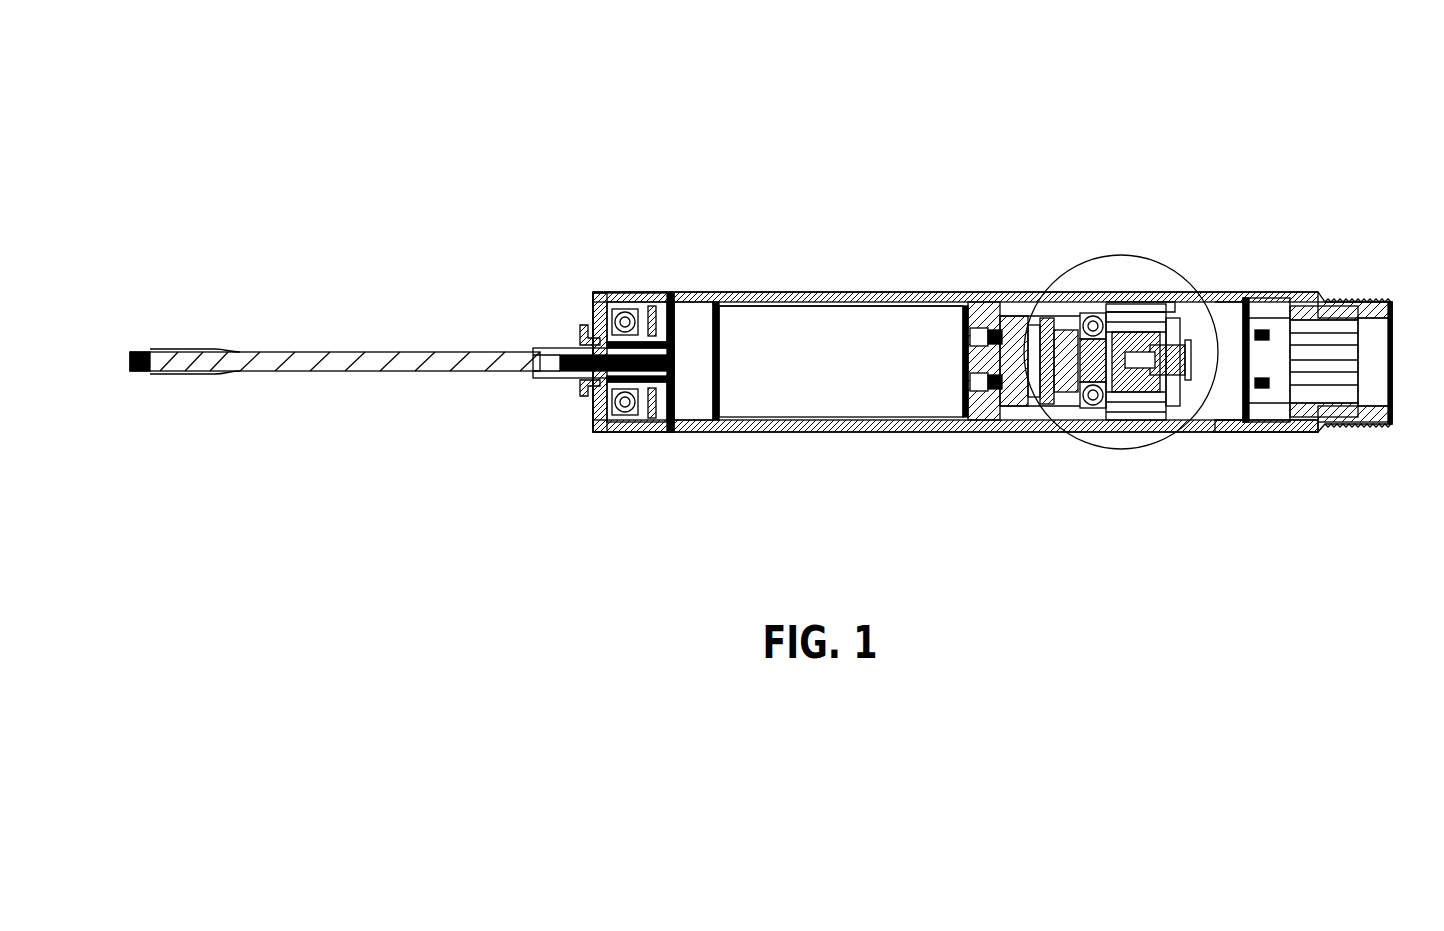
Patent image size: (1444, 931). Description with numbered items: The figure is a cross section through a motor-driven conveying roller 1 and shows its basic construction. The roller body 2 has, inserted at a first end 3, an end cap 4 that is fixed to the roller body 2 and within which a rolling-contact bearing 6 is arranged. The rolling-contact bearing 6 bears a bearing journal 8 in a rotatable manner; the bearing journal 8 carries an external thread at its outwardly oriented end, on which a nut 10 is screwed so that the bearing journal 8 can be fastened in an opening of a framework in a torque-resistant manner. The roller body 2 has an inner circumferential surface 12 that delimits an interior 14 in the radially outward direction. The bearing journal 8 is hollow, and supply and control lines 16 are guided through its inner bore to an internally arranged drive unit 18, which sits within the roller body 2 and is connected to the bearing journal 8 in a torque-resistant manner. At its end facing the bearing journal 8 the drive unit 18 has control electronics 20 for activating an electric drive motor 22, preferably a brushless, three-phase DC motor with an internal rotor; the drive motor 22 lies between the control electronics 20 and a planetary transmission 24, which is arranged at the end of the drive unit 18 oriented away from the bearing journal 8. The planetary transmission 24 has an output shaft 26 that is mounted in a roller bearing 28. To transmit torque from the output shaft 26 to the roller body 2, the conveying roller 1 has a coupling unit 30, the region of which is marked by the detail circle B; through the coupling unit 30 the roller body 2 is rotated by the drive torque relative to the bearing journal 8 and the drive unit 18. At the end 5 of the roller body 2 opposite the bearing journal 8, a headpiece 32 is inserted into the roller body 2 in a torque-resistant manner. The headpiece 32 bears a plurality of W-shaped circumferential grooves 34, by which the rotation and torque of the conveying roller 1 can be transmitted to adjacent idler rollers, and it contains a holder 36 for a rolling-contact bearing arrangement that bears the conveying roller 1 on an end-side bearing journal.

The conveying roller 1 is at (952, 192).
The roller body 2 is at (657, 292).
The first end 3 is at (596, 219).
The end cap 4 is at (606, 418).
The end 5 is at (1287, 246).
The rolling-contact bearing 6 is at (633, 433).
The bearing journal 8 is at (562, 346).
The nut 10 is at (557, 382).
The inner circumferential surface 12 is at (1203, 308).
The interior 14 is at (1218, 400).
The supply and control lines 16 is at (296, 378).
The drive unit 18 is at (848, 395).
The control electronics 20 is at (693, 396).
The electric drive motor 22 is at (750, 395).
The planetary transmission 24 is at (1046, 373).
The output shaft 26 is at (1096, 384).
The roller bearing 28 is at (1096, 409).
The coupling unit 30 is at (1150, 290).
The headpiece 32 is at (1308, 424).
The W-shaped circumferential grooves 34 is at (1350, 300).
The holder 36 is at (1374, 322).
The detail region B is at (1121, 376).